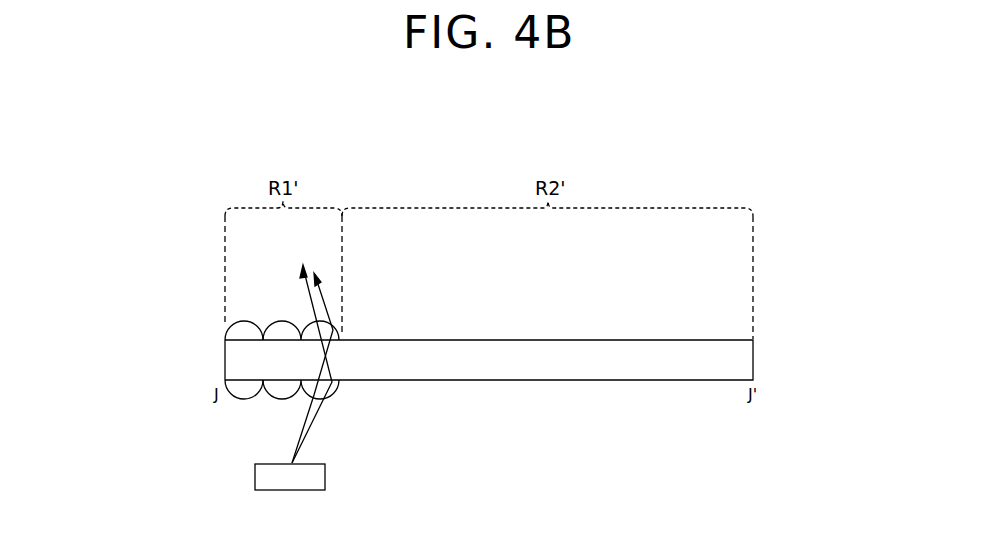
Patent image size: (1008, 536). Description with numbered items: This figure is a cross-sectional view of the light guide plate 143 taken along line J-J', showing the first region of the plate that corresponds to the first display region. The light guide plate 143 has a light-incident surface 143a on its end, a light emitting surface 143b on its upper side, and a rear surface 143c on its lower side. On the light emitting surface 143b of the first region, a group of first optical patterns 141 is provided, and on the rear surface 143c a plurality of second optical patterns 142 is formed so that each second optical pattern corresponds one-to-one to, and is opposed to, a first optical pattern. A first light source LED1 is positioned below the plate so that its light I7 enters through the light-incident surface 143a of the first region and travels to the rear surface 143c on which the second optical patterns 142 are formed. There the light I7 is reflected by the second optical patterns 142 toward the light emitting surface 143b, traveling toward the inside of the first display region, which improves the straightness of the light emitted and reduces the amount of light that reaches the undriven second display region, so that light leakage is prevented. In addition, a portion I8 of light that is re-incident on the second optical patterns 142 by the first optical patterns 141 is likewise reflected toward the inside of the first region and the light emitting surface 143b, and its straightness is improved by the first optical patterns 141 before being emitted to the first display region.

The first optical patterns 141 is at (322, 317).
The second optical patterns 142 is at (322, 403).
The light guide plate 143 is at (743, 358).
The light-incident surface 143a is at (226, 357).
The light emitting surface 143b is at (232, 321).
The rear surface 143c is at (232, 397).
The light I7 is at (312, 426).
The portion of light I8 is at (338, 349).
The first light source LED1 is at (326, 477).